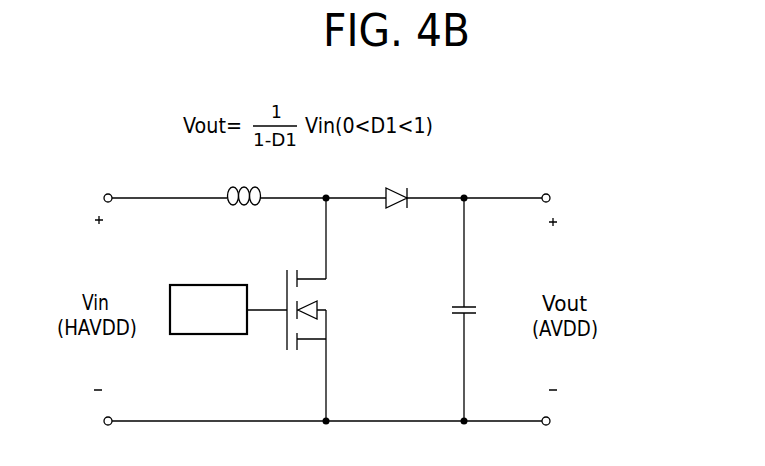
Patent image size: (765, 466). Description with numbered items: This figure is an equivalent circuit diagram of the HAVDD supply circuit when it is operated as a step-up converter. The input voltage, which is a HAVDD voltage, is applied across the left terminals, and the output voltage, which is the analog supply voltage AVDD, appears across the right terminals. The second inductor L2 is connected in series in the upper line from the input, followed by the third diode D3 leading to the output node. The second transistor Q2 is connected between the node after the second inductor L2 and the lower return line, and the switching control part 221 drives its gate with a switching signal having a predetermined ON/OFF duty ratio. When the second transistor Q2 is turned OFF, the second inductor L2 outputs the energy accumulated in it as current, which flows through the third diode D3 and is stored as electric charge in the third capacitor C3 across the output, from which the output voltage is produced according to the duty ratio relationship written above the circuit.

The switching control part 221 is at (185, 334).
The second inductor L2 is at (244, 214).
The third diode D3 is at (402, 214).
The second transistor Q2 is at (321, 310).
The third capacitor C3 is at (476, 310).